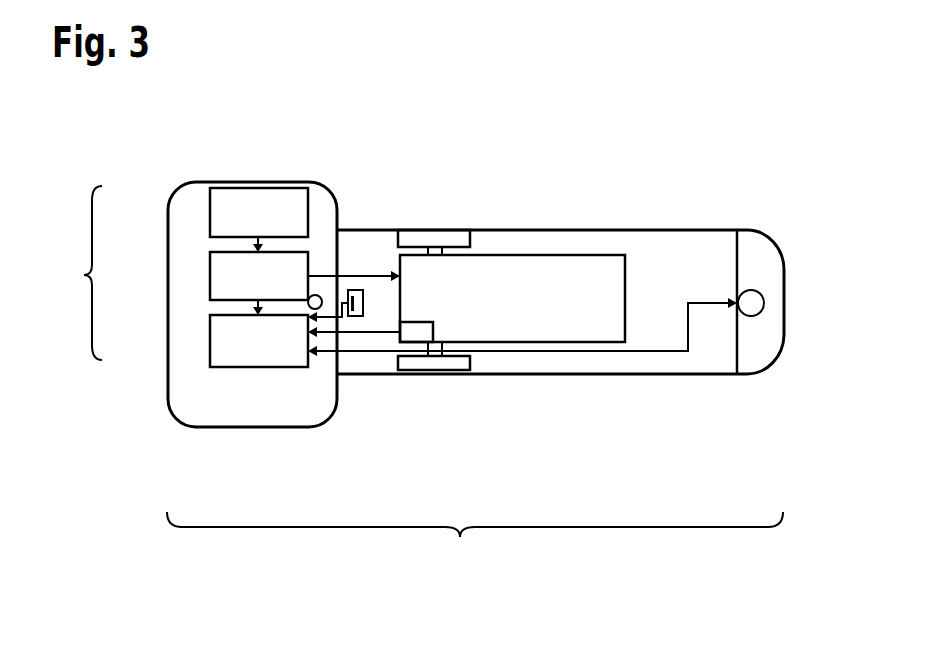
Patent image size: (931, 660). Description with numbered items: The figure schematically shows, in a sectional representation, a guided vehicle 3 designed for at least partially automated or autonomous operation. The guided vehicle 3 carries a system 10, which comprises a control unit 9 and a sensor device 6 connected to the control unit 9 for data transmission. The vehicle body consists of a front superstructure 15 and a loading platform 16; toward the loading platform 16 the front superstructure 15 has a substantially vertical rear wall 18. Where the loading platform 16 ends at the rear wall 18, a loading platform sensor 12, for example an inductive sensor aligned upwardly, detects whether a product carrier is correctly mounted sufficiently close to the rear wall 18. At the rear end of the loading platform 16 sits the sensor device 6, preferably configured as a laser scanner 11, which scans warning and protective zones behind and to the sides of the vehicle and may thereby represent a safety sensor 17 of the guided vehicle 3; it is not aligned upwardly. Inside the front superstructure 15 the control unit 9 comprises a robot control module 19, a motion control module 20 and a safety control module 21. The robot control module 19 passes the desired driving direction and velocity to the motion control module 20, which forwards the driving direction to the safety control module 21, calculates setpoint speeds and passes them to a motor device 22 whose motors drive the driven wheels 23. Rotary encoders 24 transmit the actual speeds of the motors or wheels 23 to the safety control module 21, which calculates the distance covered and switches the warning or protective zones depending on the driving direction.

The guided vehicle 3 is at (752, 160).
The sensor device 6 is at (556, 379).
The control unit 9 is at (78, 273).
The system 10 is at (475, 542).
The laser scanner 11 is at (556, 379).
The loading platform sensor 12 is at (363, 313).
The front superstructure 15 is at (250, 182).
The loading platform 16 is at (687, 257).
The safety sensor 17 is at (752, 318).
The rear wall 18 is at (338, 207).
The robot control module 19 is at (210, 216).
The motion control module 20 is at (210, 277).
The safety control module 21 is at (210, 338).
The motor device 22 is at (565, 275).
The driven wheels 23 is at (462, 237).
The rotary encoders 24 is at (415, 335).